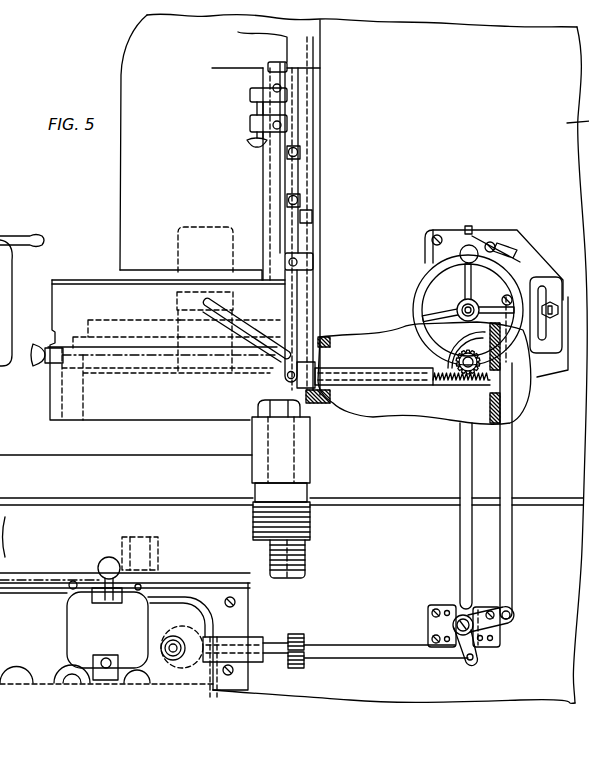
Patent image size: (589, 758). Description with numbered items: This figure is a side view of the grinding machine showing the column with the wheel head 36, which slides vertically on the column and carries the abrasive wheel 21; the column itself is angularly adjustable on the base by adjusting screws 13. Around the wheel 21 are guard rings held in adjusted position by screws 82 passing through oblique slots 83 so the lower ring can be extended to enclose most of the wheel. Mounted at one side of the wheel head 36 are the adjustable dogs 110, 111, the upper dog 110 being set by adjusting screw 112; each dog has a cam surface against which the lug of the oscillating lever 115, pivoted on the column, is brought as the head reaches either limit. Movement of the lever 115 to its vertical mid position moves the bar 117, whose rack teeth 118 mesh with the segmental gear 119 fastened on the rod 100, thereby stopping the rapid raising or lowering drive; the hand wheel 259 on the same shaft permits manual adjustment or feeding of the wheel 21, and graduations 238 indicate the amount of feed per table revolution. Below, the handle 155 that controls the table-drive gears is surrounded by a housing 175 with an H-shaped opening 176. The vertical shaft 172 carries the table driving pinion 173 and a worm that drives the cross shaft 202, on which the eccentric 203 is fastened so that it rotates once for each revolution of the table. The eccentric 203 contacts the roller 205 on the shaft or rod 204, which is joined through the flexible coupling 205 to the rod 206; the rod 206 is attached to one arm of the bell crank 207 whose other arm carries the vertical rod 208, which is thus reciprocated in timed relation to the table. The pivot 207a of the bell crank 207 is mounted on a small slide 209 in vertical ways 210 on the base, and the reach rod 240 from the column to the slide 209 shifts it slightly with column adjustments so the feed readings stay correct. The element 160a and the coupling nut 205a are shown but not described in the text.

The wheel head 36 is at (132, 165).
The upper dog 110 is at (270, 63).
The adjusting screw 112 is at (257, 102).
The lower dog 111 is at (312, 215).
The oscillating lever 115 is at (290, 312).
The hand wheel 259 is at (7, 263).
The rod 100 is at (458, 308).
The oblique slots 83 is at (247, 329).
The screws 82 is at (37, 363).
The abrasive wheel 21 is at (143, 422).
The segmental gear 119 is at (462, 360).
The bar 117 is at (447, 388).
The rack teeth 118 is at (414, 373).
The pinion shaft 160a is at (475, 363).
The graduations 238 is at (548, 352).
The adjusting screws 13 is at (253, 490).
The reach rod 240 is at (463, 472).
The vertical rod 208 is at (510, 549).
The handle 155 is at (98, 567).
The pinion 173 is at (160, 552).
The vertical shaft 172 is at (143, 572).
The H-shaped opening 176 is at (92, 604).
The housing 175 is at (78, 642).
The shaft or rod 204 is at (273, 640).
The coupling nut 205a is at (303, 637).
The slide 209 is at (457, 613).
The pivot 207a is at (472, 612).
The vertical ways 210 is at (428, 627).
The bell crank 207 is at (500, 645).
The cross shaft 202 is at (173, 660).
The eccentric 203 is at (182, 668).
The roller / flexible coupling 205 is at (213, 697).
The rod or shaft 206 is at (373, 650).